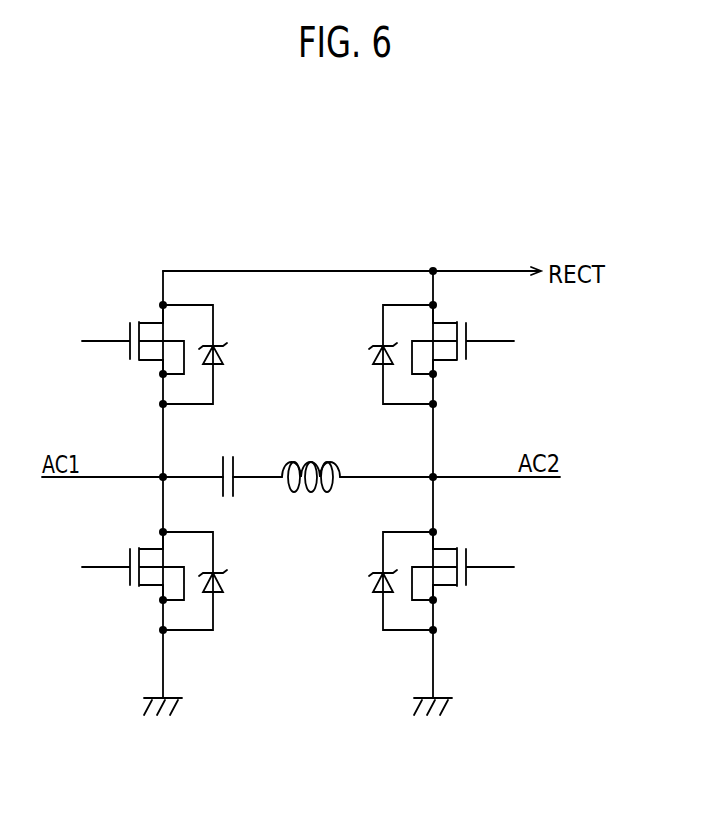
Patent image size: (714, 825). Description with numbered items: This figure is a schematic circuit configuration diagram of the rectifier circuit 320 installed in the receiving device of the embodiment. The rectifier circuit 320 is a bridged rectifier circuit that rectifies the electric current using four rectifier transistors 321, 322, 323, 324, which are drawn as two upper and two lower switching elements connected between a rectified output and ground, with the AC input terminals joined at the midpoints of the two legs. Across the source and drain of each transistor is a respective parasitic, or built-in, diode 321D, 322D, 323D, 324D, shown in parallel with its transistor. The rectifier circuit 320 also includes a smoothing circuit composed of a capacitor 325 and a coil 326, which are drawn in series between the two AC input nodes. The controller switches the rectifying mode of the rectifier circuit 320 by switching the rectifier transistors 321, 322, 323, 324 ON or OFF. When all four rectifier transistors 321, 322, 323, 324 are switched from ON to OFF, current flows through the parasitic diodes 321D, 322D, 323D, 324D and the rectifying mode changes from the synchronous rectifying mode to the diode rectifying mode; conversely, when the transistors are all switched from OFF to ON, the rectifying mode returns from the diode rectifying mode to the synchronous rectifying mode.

The rectifier circuit 320 is at (403, 243).
The rectifier transistor 321 is at (128, 336).
The parasitic diode 321D is at (260, 325).
The rectifier transistor 322 is at (468, 334).
The parasitic diode 322D is at (378, 345).
The rectifier transistor 323 is at (128, 563).
The parasitic diode 323D is at (260, 552).
The rectifier transistor 324 is at (468, 561).
The parasitic diode 324D is at (382, 573).
The capacitor 325 is at (234, 457).
The coil 326 is at (320, 461).